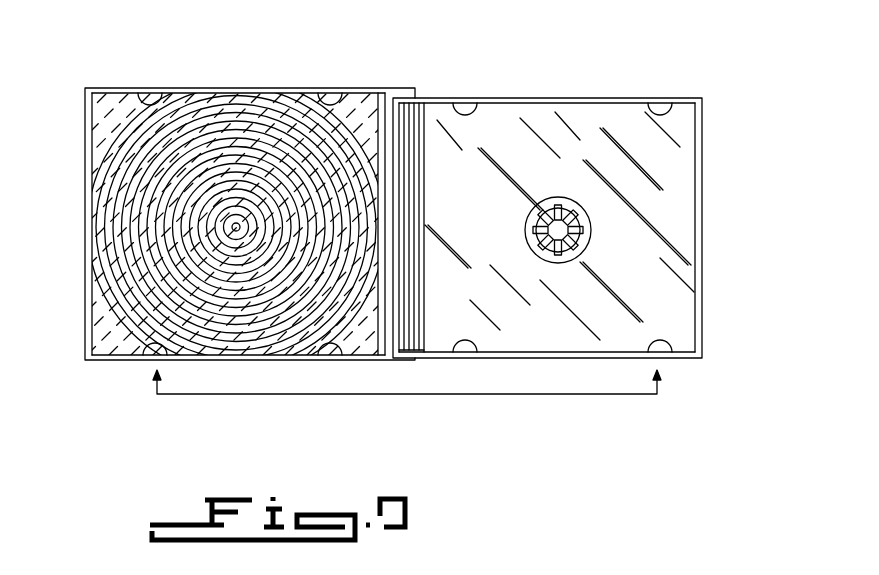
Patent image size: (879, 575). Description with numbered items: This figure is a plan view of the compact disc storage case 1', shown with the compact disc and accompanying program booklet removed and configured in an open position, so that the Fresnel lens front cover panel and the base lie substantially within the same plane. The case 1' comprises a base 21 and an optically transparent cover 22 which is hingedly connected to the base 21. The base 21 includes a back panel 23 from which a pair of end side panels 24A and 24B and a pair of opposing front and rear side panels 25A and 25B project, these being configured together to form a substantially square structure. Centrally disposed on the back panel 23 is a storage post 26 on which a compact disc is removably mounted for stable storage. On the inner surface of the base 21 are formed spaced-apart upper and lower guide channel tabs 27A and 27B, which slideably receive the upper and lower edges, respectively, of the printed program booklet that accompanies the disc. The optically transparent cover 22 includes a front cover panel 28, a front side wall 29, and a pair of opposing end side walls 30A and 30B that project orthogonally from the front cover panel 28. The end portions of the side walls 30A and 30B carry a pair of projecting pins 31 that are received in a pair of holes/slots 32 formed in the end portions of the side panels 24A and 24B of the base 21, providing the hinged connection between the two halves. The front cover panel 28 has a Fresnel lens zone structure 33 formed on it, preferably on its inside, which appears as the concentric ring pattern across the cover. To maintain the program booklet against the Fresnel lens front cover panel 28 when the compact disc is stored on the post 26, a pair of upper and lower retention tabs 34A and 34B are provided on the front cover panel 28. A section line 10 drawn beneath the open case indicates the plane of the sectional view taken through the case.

The compact disc storage case 1' is at (393, 199).
The section line 10 is at (409, 399).
The base 21 is at (515, 80).
The optically transparent cover 22 is at (275, 76).
The back panel 23 is at (630, 98).
The end side panel 24A is at (610, 98).
The end side panel 24B is at (607, 360).
The front side panel 25A is at (400, 172).
The rear side panel 25B is at (702, 250).
The storage post 26 is at (592, 228).
The upper guide channel tab 27A is at (470, 98).
The lower guide channel tab 27B is at (478, 358).
The front cover panel 28 is at (218, 90).
The front side wall 29 is at (90, 220).
The end side wall 30A is at (190, 90).
The end side wall 30B is at (278, 362).
The projecting pin 31 is at (420, 98).
The hole/slot 32 is at (425, 97).
The Fresnel lens zone structure 33 is at (348, 156).
The upper retention tab 34A is at (153, 90).
The lower retention tab 34B is at (140, 362).